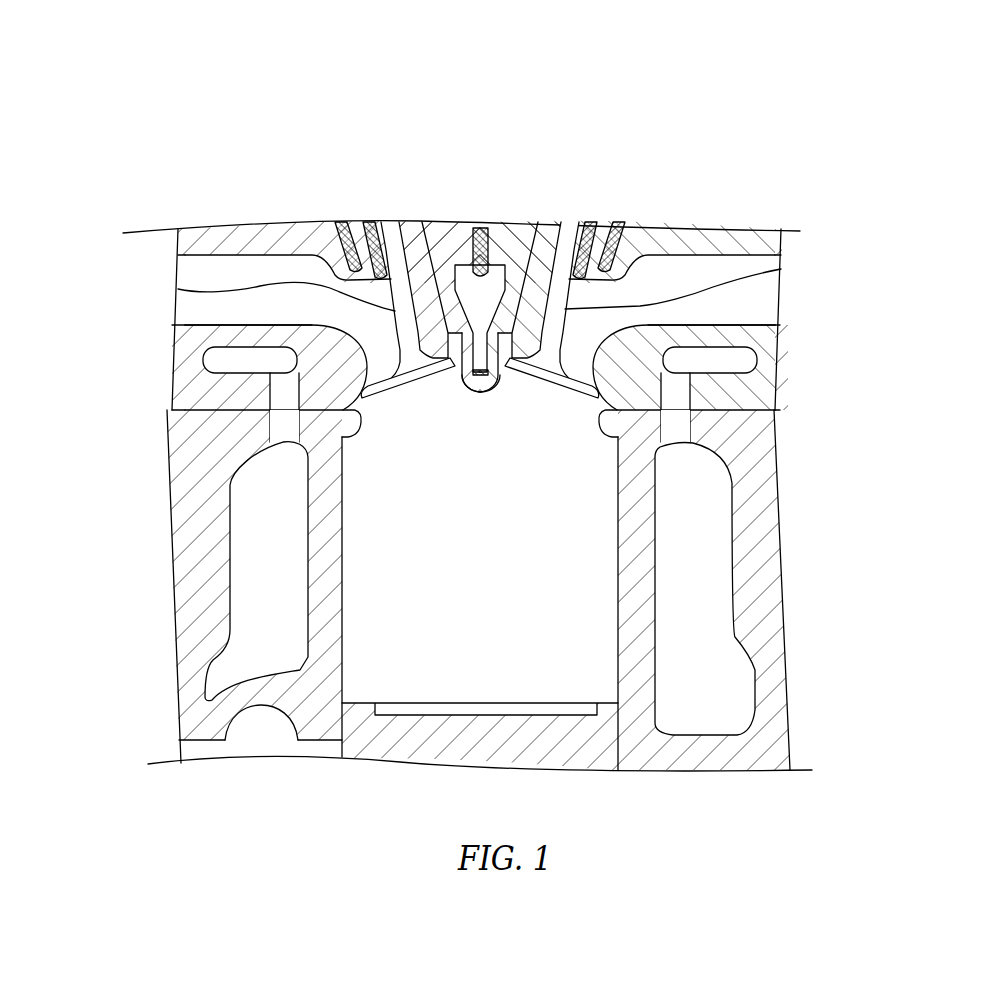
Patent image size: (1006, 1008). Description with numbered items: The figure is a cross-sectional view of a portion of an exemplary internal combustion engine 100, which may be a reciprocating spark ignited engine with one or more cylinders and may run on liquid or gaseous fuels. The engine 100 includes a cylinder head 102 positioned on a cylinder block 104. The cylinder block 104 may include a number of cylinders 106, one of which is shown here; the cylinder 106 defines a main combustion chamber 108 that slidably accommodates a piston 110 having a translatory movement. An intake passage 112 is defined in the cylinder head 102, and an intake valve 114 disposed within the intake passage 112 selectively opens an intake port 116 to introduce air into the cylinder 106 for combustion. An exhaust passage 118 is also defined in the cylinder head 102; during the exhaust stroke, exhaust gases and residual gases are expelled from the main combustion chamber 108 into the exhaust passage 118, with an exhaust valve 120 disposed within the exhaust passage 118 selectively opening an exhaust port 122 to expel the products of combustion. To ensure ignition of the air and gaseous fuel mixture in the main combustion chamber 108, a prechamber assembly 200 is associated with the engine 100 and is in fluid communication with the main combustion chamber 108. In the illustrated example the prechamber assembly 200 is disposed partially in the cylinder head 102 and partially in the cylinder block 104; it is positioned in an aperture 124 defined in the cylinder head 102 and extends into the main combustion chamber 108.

The internal combustion engine 100 is at (889, 130).
The cylinder head 102 is at (803, 244).
The cylinder block 104 is at (787, 557).
The cylinder 106 is at (343, 636).
The main combustion chamber 108 is at (447, 580).
The piston 110 is at (568, 727).
The intake passage 112 is at (208, 308).
The intake valve 114 is at (178, 289).
The intake port 116 is at (358, 426).
The exhaust passage 118 is at (733, 307).
The exhaust valve 120 is at (781, 269).
The exhaust port 122 is at (600, 433).
The aperture 124 is at (500, 365).
The prechamber assembly 200 is at (518, 247).